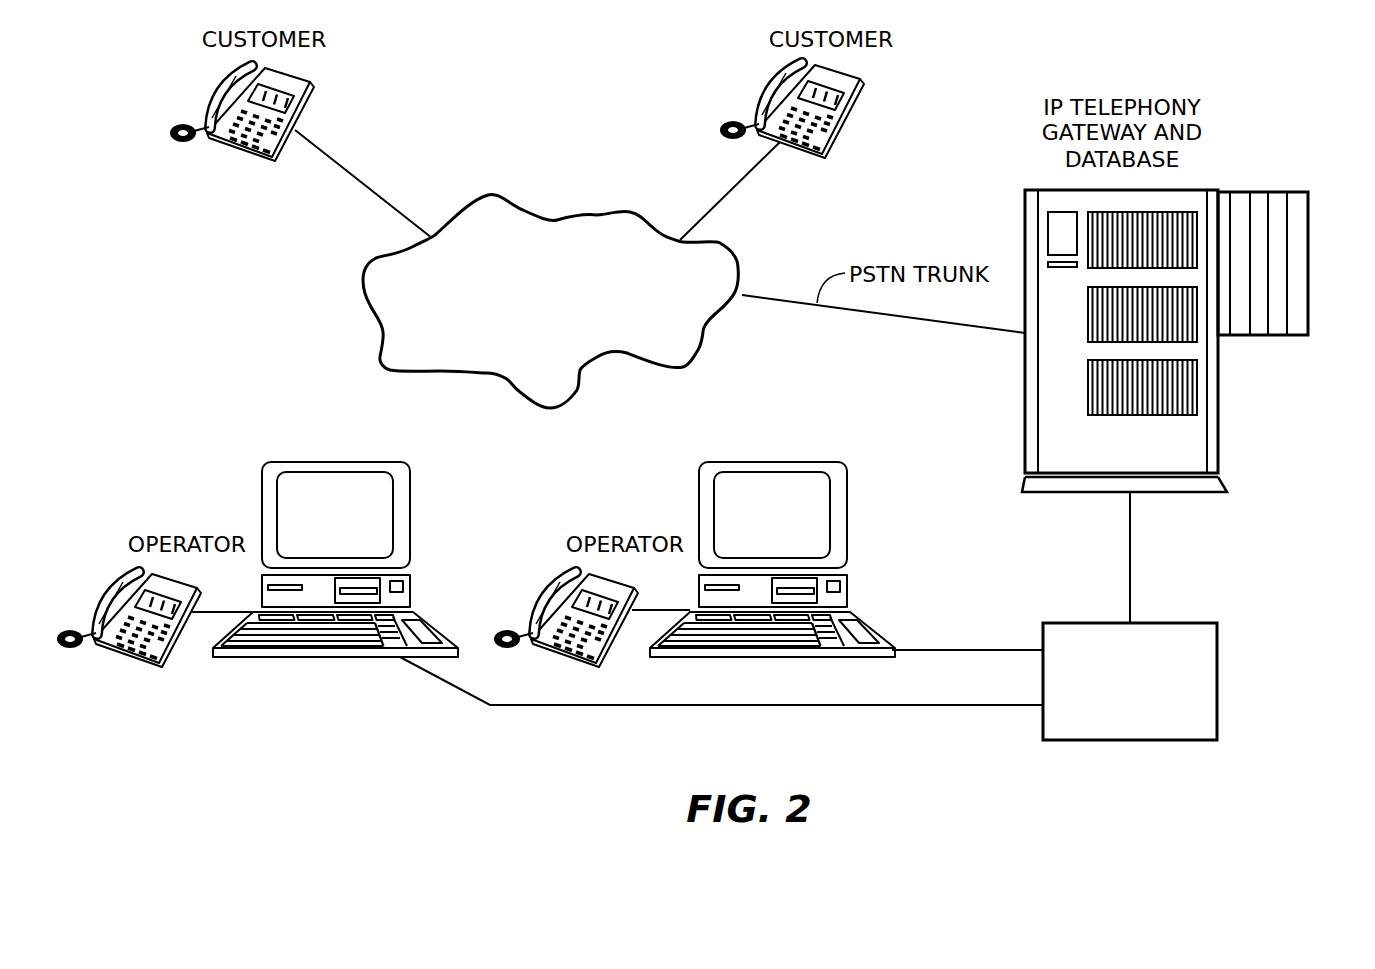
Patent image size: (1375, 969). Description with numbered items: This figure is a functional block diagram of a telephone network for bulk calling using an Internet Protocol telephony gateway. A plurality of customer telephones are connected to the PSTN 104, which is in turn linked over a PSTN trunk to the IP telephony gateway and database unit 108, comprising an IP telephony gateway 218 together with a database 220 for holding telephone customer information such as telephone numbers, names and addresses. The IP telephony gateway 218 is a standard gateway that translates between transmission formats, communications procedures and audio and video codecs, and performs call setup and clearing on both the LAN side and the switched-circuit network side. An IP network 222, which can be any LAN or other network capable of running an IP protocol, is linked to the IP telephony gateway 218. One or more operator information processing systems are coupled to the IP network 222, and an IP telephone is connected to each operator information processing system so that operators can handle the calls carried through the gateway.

The PSTN 104 is at (523, 210).
The IP telephony gateway and database 108 is at (1189, 322).
The IP telephony gateway 218 is at (1307, 260).
The database 220 is at (1197, 393).
The IP network 222 is at (1202, 622).